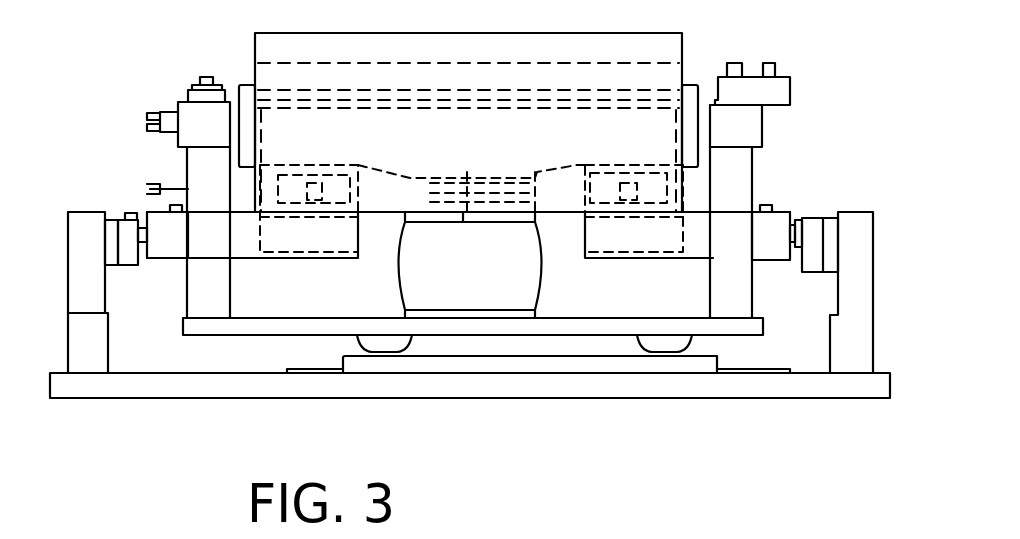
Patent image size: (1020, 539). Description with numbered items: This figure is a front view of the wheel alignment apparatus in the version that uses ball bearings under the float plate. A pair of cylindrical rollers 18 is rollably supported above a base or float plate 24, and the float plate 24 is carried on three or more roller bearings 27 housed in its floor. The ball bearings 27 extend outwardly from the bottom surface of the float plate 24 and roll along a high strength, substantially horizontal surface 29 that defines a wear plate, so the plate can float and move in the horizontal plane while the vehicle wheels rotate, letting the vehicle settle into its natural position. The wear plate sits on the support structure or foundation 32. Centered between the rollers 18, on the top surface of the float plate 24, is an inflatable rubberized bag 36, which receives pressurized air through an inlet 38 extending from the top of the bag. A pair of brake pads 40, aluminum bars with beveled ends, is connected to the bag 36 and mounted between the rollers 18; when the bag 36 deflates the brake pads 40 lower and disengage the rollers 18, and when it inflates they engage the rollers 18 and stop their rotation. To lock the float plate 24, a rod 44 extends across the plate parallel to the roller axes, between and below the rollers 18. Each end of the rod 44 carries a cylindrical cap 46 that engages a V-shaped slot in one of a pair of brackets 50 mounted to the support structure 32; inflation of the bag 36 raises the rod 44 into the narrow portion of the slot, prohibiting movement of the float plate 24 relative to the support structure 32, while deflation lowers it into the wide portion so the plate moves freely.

The rollers 18 is at (683, 33).
The float plate 24 is at (760, 320).
The roller bearings 27 is at (383, 352).
The horizontal surface 29 is at (537, 356).
The support structure 32 is at (858, 367).
The inflatable rubberized bag 36 is at (540, 278).
The inlet 38 is at (465, 213).
The brake pads 40 is at (333, 242).
The rod 44 is at (775, 212).
The cylindrical cap 46 is at (815, 218).
The brackets 50 is at (873, 233).